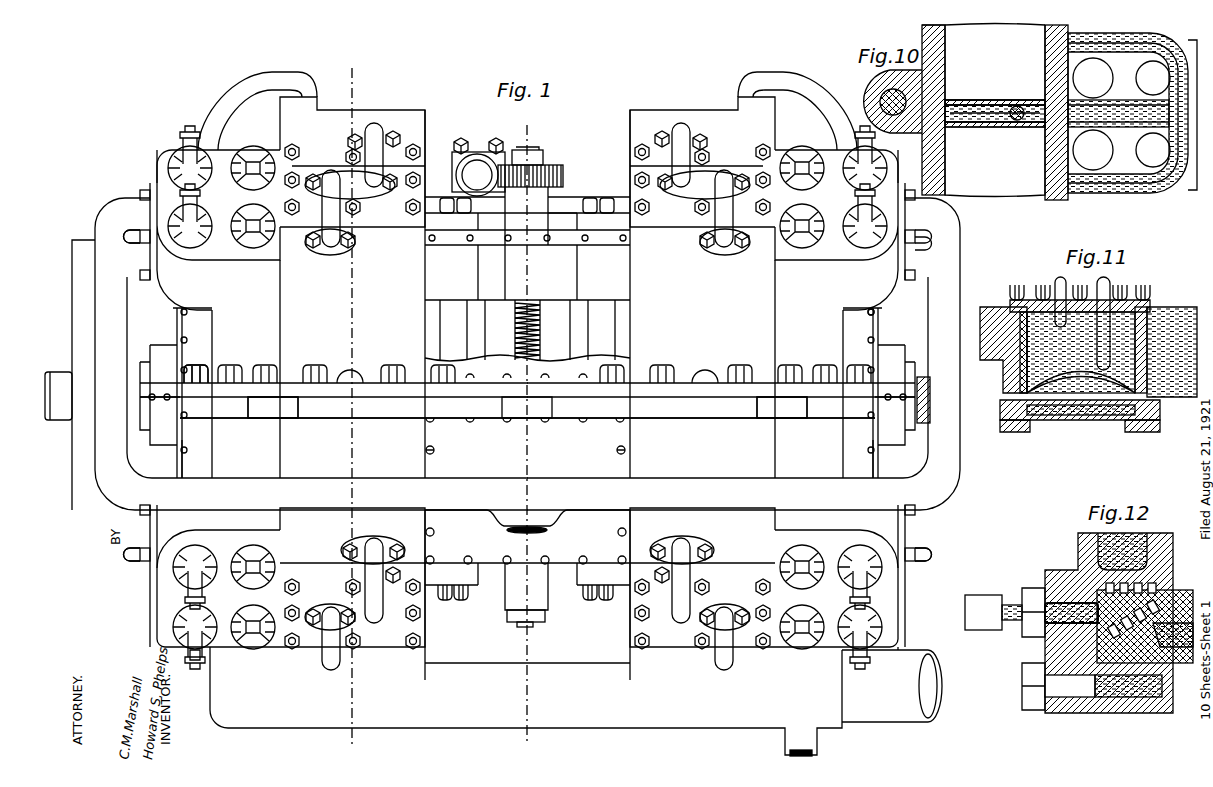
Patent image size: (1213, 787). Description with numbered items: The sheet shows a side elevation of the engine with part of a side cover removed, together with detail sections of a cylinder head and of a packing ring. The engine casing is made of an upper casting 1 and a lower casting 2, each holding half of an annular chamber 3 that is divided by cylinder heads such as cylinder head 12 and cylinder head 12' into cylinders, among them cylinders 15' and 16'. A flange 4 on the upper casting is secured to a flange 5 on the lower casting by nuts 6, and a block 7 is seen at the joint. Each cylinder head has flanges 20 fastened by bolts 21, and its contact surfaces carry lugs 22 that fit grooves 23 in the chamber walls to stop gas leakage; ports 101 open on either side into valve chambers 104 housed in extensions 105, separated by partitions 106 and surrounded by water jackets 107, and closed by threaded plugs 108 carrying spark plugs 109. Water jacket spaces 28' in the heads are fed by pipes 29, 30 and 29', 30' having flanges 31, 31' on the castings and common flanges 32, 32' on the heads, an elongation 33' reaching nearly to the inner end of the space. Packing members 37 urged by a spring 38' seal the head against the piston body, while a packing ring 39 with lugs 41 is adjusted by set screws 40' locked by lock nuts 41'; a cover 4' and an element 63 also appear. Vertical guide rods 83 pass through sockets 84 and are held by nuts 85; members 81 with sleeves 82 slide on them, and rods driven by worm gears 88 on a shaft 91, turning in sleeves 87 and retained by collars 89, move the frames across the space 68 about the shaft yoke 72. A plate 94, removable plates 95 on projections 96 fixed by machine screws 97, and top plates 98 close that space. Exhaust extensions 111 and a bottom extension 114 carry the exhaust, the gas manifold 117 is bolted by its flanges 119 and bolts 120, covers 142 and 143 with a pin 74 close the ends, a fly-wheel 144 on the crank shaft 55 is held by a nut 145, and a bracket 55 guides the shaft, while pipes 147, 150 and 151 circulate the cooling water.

In FIG. 1, the upper casting 1 is at (507, 294).
In FIG. 10, the upper casting 1 is at (921, 150).
In FIG. 11, the upper casting 1 is at (1015, 378).
In FIG. 1, the lower casting 2 is at (502, 439).
In FIG. 10, the chamber 3 is at (995, 37).
In FIG. 1, the flange 4 is at (527, 391).
In FIG. 1, the flange 5 is at (527, 409).
In FIG. 1, the nuts 6 is at (333, 743).
In FIG. 1, the section line 7-7 / spacer block 7 is at (508, 743).
In FIG. 10, the cylinder head 12 is at (995, 124).
In FIG. 11, the cylinder head 12' is at (1093, 284).
In FIG. 10, the cylinder 15' is at (995, 62).
In FIG. 10, the cylinder 16' is at (995, 162).
In FIG. 1, the flanges 20 is at (527, 372).
In FIG. 1, the bolts 21 is at (300, 152).
In FIG. 10, the lugs 22 is at (1060, 105).
In FIG. 11, the lugs 22 is at (1010, 312).
In FIG. 10, the grooves 23 is at (1003, 135).
In FIG. 11, the grooves 23 is at (1150, 303).
In FIG. 10, the water jacket spaces 28' is at (995, 95).
In FIG. 11, the water jacket spaces 28' is at (1028, 284).
In FIG. 1, the pipe 29 is at (374, 373).
In FIG. 1, the pipe 29' is at (704, 373).
In FIG. 11, the pipe 29' is at (1110, 316).
In FIG. 1, the pipe 30 is at (331, 420).
In FIG. 1, the pipe 30' is at (699, 420).
In FIG. 11, the pipe 30' is at (1071, 295).
In FIG. 1, the flanges 31 is at (362, 394).
In FIG. 1, the flanges 31' is at (704, 391).
In FIG. 1, the common flanges 32 is at (351, 400).
In FIG. 1, the common flanges 32' is at (704, 400).
In FIG. 10, the elongation 33' is at (1026, 99).
In FIG. 11, the elongation 33' is at (1155, 337).
In FIG. 11, the packing members 37 is at (1081, 387).
In FIG. 11, the spring 38' is at (1080, 409).
In FIG. 12, the packing ring 39 is at (1160, 590).
In FIG. 12, the set screws 40' is at (993, 612).
In FIG. 12, the lugs 41 is at (1118, 629).
In FIG. 12, the lock nuts 41' is at (1060, 612).
In FIG. 10, the cover 4' is at (920, 36).
In FIG. 1, the crank shaft 55 is at (525, 392).
In FIG. 1, the block 63 is at (921, 386).
In FIG. 12, the block 63 is at (1097, 623).
In FIG. 1, the space 68 is at (512, 330).
In FIG. 1, the shaft yoke 72 is at (555, 330).
In FIG. 1, the pin 74 is at (877, 313).
In FIG. 1, the members 81 is at (496, 272).
In FIG. 1, the sleeves 82 is at (527, 272).
In FIG. 1, the vertical guide rods 83 is at (527, 330).
In FIG. 1, the sockets 84 is at (527, 391).
In FIG. 1, the nuts 85 is at (455, 595).
In FIG. 1, the sleeves 87 is at (526, 398).
In FIG. 1, the worm gears 88 is at (563, 171).
In FIG. 1, the collars 89 is at (526, 617).
In FIG. 1, the shaft 91 is at (478, 167).
In FIG. 1, the casing or plate 94 is at (527, 595).
In FIG. 1, the removable plates 95 is at (527, 406).
In FIG. 1, the projections 96 is at (527, 237).
In FIG. 1, the machine screws 97 is at (620, 450).
In FIG. 1, the removable plates 98 is at (560, 212).
In FIG. 10, the ports 101 is at (1058, 112).
In FIG. 10, the valve chamber 104 is at (1121, 115).
In FIG. 1, the extensions 105 is at (527, 398).
In FIG. 10, the extensions 105 is at (1138, 37).
In FIG. 10, the partitions 106 is at (1140, 110).
In FIG. 10, the water jackets 107 is at (1108, 36).
In FIG. 11, the water jackets 107 is at (1178, 315).
In FIG. 1, the threaded plugs 108 is at (524, 396).
In FIG. 1, the spark plug 109 is at (186, 139).
In FIG. 1, the extensions 111 is at (527, 369).
In FIG. 1, the extension 114 is at (526, 701).
In FIG. 1, the gas manifold 117 is at (527, 354).
In FIG. 1, the flanges 119 is at (150, 208).
In FIG. 1, the bolts 120 is at (150, 265).
In FIG. 1, the cover 142 is at (182, 320).
In FIG. 1, the cover 143 is at (182, 453).
In FIG. 1, the fly-wheel 144 is at (85, 375).
In FIG. 1, the nut 145 is at (59, 396).
In FIG. 1, the pipe 147 is at (797, 111).
In FIG. 1, the pipe 150 is at (257, 111).
In FIG. 1, the pipe 151 is at (205, 660).